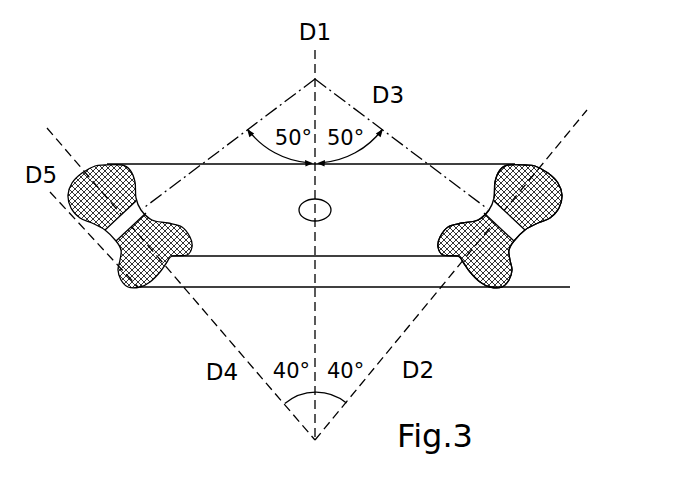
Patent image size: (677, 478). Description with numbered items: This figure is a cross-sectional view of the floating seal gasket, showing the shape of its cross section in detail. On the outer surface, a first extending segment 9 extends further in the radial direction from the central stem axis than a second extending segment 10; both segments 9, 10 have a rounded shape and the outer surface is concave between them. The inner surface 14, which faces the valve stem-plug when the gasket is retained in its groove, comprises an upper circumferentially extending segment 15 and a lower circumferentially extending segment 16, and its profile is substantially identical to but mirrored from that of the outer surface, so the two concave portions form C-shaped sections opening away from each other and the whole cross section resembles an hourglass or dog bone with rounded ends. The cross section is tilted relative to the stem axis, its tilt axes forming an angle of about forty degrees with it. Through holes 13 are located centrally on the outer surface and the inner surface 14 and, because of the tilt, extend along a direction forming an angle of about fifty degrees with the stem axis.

The first extending segment 9 is at (426, 195).
The second extending segment 10 is at (502, 288).
The through holes 13 is at (515, 230).
The inner surface 14 is at (408, 190).
The upper circumferentially extending segment 15 is at (513, 163).
The lower circumferentially extending segment 16 is at (437, 237).